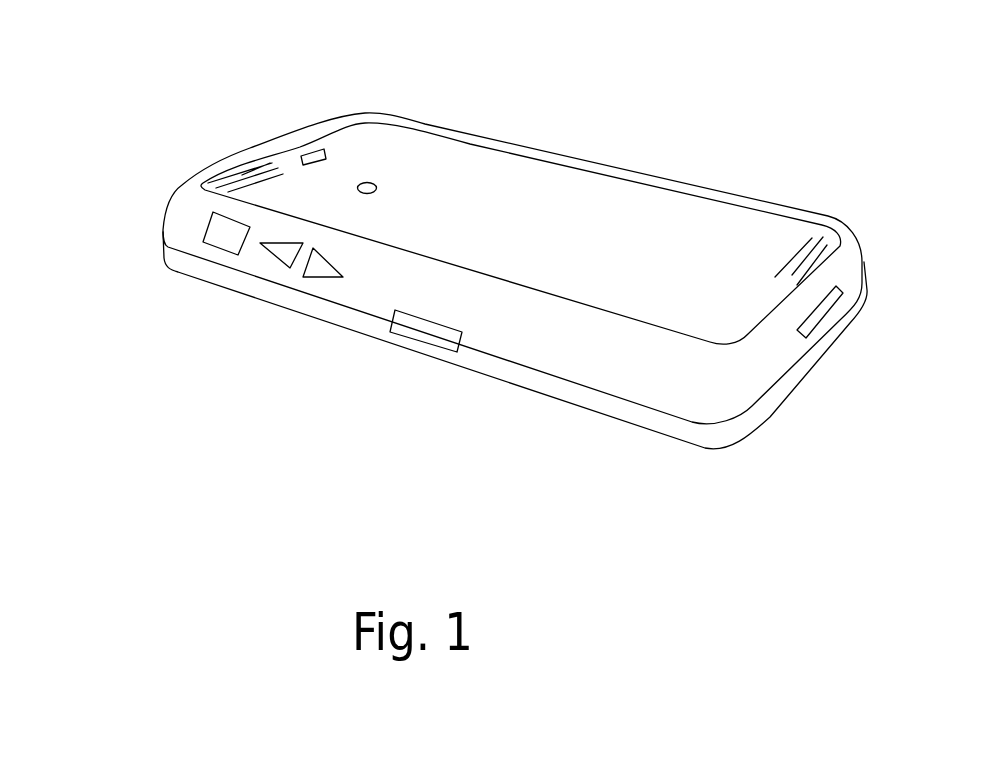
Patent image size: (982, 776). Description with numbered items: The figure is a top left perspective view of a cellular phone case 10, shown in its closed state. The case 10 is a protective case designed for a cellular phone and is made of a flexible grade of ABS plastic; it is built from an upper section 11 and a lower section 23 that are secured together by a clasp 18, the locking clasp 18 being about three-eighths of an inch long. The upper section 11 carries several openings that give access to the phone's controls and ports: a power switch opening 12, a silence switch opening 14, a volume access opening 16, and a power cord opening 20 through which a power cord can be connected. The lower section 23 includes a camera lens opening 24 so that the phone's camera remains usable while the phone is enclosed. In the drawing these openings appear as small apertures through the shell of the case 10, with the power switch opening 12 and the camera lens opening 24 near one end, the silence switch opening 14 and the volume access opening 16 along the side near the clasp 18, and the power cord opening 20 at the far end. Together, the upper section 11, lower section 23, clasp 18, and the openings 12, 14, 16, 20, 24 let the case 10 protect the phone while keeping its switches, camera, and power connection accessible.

The cellular phone case 10 is at (200, 95).
The upper section 11 is at (182, 185).
The power switch opening 12 is at (313, 147).
The silence switch opening 14 is at (162, 262).
The volume access opening 16 is at (321, 277).
The clasp 18 is at (425, 344).
The power cord opening 20 is at (819, 325).
The lower section 23 is at (163, 248).
The camera lens opening 24 is at (373, 182).